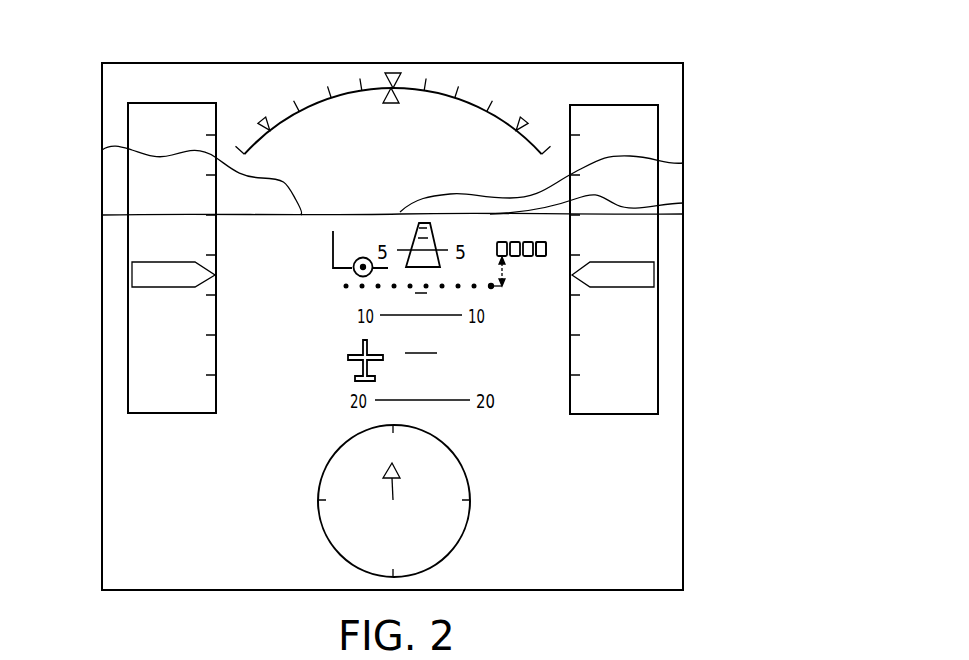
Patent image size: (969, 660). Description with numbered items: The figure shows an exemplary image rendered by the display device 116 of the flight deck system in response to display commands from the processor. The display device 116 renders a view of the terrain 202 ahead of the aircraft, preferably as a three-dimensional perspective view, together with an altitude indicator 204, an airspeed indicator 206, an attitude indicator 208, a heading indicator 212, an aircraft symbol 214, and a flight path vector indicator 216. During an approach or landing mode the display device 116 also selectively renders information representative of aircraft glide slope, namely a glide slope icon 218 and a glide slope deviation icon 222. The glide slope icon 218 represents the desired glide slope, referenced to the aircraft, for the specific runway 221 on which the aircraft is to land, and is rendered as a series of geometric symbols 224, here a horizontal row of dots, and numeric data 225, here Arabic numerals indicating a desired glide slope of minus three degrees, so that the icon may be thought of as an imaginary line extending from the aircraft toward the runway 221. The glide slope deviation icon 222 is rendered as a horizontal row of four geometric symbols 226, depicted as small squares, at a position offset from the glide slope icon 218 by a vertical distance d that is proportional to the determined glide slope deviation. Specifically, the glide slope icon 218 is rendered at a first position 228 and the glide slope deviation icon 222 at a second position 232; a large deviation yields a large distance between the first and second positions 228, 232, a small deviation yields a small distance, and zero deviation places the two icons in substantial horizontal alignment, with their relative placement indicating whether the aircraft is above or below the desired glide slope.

The display device 116 is at (657, 63).
The terrain 202 is at (292, 226).
The altitude indicator 204 is at (658, 116).
The airspeed indicator 206 is at (128, 176).
The attitude indicator 208 is at (465, 101).
The heading indicator 212 is at (318, 530).
The aircraft symbol 214 is at (362, 376).
The flight path vector indicator 216 is at (363, 257).
The glide slope icon 218 is at (362, 326).
The runway 221 is at (425, 223).
The glide slope deviation icon 222 is at (504, 197).
The geometric symbols 224 is at (492, 289).
The numeric data 225 is at (311, 283).
The geometric symbols 226 is at (541, 257).
The first position 228 is at (291, 287).
The second position 232 is at (552, 245).